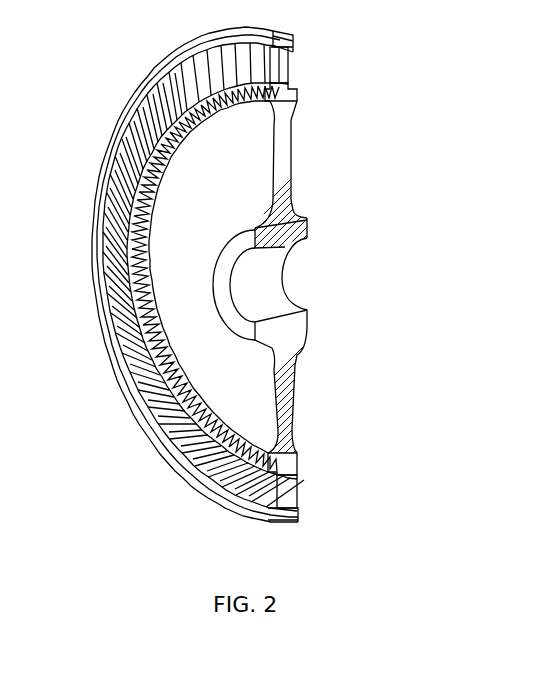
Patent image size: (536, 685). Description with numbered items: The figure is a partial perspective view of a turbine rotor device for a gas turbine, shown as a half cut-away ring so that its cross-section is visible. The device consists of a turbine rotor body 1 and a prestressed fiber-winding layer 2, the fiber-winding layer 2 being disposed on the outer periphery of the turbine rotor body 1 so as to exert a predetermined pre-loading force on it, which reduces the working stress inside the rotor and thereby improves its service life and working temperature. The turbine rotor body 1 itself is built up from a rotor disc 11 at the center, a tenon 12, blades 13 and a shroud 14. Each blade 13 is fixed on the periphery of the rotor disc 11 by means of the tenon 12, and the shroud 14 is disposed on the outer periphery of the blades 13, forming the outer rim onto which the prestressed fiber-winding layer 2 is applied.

The turbine rotor body 1 is at (308, 291).
The prestressed fiber-winding layer 2 is at (293, 35).
The rotor disc 11 is at (308, 335).
The tenon 12 is at (292, 100).
The blades 13 is at (283, 75).
The shroud 14 is at (297, 45).